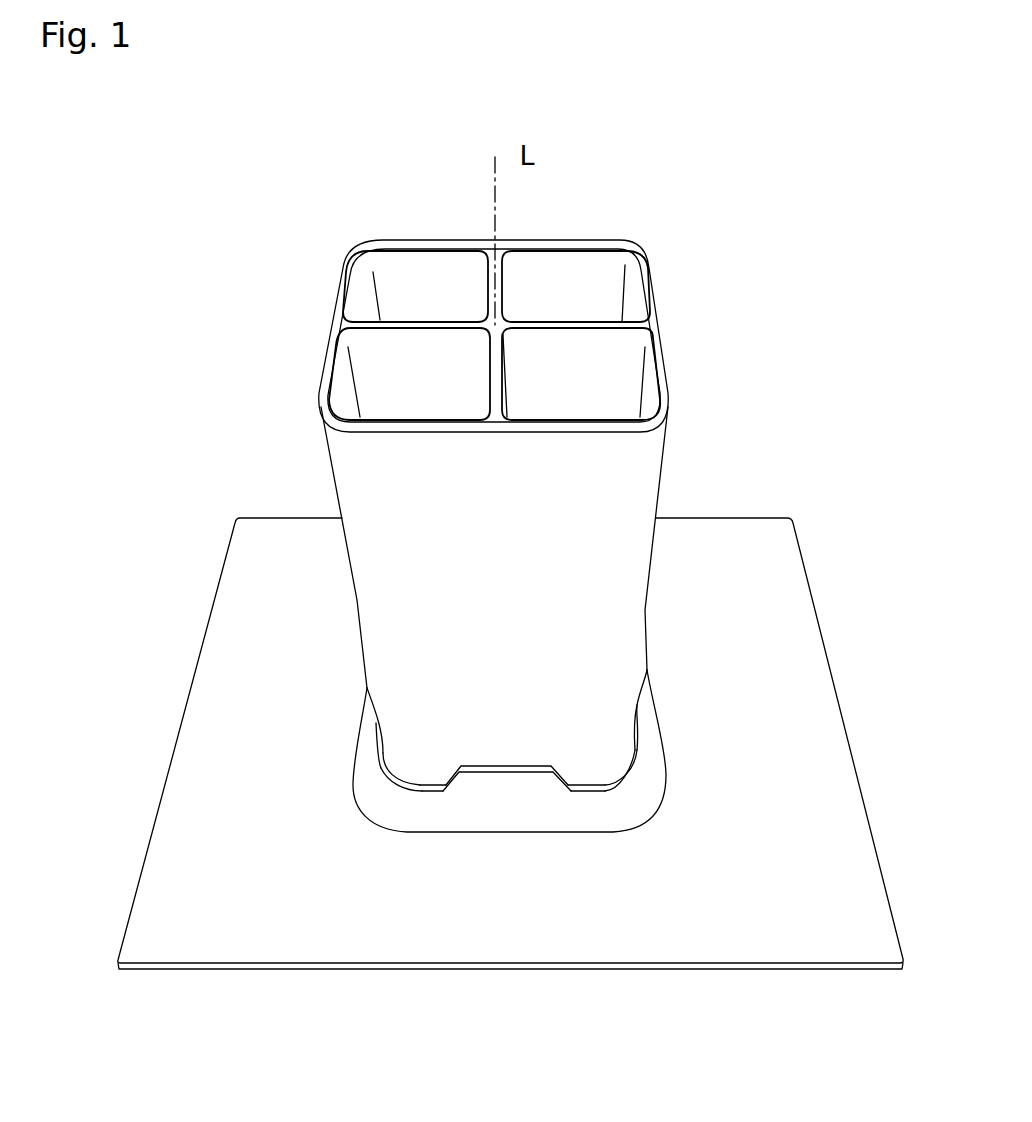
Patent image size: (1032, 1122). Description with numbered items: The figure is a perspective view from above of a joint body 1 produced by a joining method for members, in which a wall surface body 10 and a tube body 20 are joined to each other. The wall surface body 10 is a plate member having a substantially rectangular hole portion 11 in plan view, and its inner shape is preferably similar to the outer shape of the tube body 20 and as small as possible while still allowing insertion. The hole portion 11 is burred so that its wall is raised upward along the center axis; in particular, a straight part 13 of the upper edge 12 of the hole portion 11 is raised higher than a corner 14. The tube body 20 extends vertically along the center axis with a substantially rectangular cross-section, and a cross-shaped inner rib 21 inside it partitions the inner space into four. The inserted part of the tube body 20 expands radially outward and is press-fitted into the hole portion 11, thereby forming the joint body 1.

The joint body 1 is at (267, 255).
The wall surface body 10 is at (217, 636).
The hole portion 11 is at (383, 757).
The edge 12 is at (437, 789).
The straight part 13 is at (523, 777).
The corner 14 is at (393, 783).
The tube body 20 is at (665, 347).
The inner rib 21 is at (502, 293).